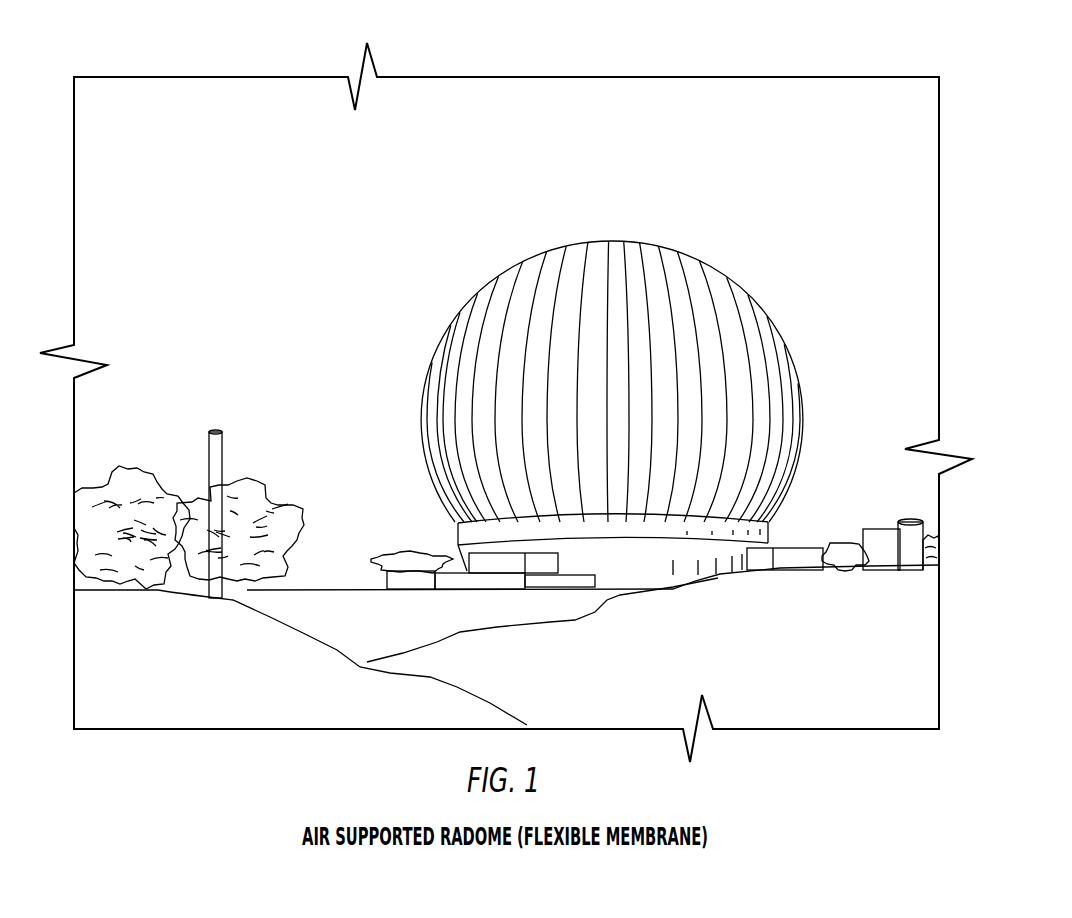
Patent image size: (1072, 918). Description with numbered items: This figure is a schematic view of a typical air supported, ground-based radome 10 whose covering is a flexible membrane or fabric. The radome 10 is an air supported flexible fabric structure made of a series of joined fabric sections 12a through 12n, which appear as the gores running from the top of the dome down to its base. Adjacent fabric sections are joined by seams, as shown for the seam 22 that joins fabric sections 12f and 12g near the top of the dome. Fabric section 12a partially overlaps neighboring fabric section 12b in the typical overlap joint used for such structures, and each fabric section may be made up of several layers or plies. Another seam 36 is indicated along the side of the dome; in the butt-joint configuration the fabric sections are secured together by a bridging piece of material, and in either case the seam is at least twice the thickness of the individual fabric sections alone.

The radome 10 is at (725, 281).
The fabric section 12a is at (467, 316).
The fabric section 12b is at (493, 278).
The fabric section 12f is at (597, 272).
The fabric section 12g is at (640, 245).
The fabric section 12n is at (770, 322).
The seam 22 is at (620, 278).
The seam 36 is at (785, 423).